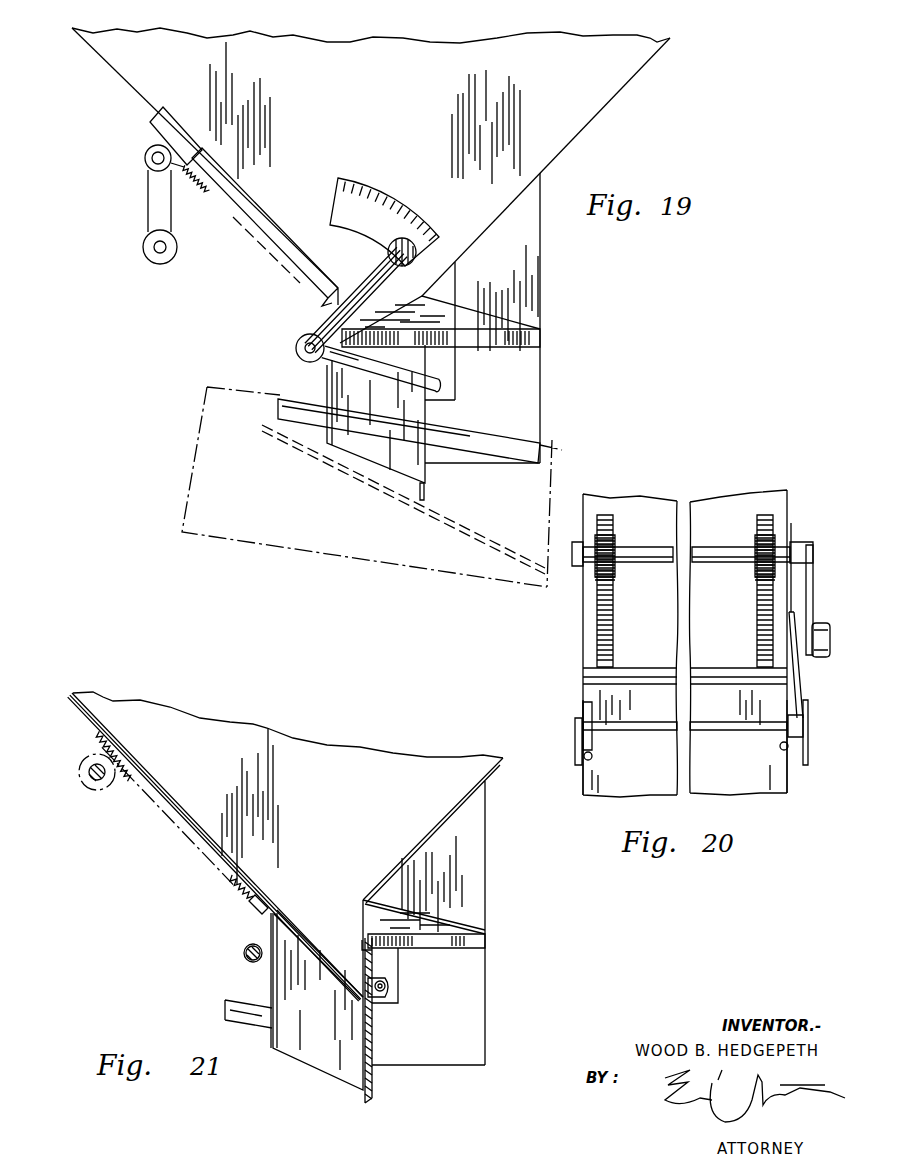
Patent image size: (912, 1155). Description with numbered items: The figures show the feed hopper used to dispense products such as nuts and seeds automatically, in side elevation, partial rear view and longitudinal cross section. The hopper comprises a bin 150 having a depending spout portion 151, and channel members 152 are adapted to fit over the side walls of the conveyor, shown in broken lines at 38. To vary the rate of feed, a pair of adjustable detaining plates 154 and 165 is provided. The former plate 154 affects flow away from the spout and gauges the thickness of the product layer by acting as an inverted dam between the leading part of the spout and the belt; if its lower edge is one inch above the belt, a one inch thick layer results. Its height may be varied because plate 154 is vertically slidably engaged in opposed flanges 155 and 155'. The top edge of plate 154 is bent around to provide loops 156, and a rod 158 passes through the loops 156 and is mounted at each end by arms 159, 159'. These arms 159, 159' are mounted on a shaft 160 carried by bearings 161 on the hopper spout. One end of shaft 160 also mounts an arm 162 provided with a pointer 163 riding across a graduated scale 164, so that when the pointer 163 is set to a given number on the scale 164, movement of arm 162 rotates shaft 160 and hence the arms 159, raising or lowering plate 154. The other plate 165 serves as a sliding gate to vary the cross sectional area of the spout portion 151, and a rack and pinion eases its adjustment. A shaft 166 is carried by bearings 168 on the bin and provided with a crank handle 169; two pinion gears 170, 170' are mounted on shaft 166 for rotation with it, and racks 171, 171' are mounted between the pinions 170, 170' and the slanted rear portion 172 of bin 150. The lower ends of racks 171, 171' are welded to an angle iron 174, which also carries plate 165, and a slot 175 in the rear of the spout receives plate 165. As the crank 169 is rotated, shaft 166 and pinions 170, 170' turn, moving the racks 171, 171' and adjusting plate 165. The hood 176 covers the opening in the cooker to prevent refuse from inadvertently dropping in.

In FIG. 19, the conveyor 38 is at (552, 478).
In FIG. 19, the bin 150 is at (623, 82).
In FIG. 20, the bin 150 is at (654, 500).
In FIG. 21, the bin 150 is at (262, 736).
In FIG. 19, the spout portion 151 is at (333, 380).
In FIG. 20, the spout portion 151 is at (627, 791).
In FIG. 21, the spout portion 151 is at (278, 993).
In FIG. 19, the channel members 152 is at (278, 406).
In FIG. 21, the channel members 152 is at (225, 1023).
In FIG. 19, the detaining plate 154 is at (425, 502).
In FIG. 21, the detaining plate 154 is at (370, 1051).
In FIG. 20, the flange 155 is at (685, 676).
In FIG. 21, the flange 155 is at (403, 975).
In FIG. 21, the flange 155' is at (348, 938).
In FIG. 19, the loops 156 is at (442, 389).
In FIG. 21, the loops 156 is at (386, 995).
In FIG. 21, the rod 158 is at (389, 985).
In FIG. 20, the arm 159 is at (812, 734).
In FIG. 20, the arm 159' is at (560, 733).
In FIG. 20, the shaft 160 is at (660, 734).
In FIG. 21, the shaft 160 is at (254, 948).
In FIG. 20, the bearings 161 is at (588, 760).
In FIG. 21, the bearings 161 is at (246, 958).
In FIG. 19, the arm 162 is at (366, 290).
In FIG. 20, the arm 162 is at (797, 696).
In FIG. 19, the pointer 163 is at (418, 244).
In FIG. 20, the pointer 163 is at (793, 612).
In FIG. 19, the graduated scale 164 is at (403, 199).
In FIG. 21, the detaining plate 165 is at (288, 921).
In FIG. 19, the shaft 166 is at (152, 157).
In FIG. 20, the shaft 166 is at (622, 550).
In FIG. 21, the shaft 166 is at (100, 784).
In FIG. 19, the bearings 168 is at (158, 136).
In FIG. 20, the bearings 168 is at (801, 543).
In FIG. 19, the crank handle 169 is at (162, 223).
In FIG. 20, the crank handle 169 is at (814, 581).
In FIG. 20, the pinion gear 170 is at (739, 558).
In FIG. 20, the pinion gear 170' is at (626, 560).
In FIG. 19, the rack 171 is at (241, 224).
In FIG. 20, the rack 171 is at (744, 591).
In FIG. 20, the rack 171' is at (626, 591).
In FIG. 21, the rack 171' is at (174, 814).
In FIG. 19, the slanted rear portion 172 is at (124, 82).
In FIG. 20, the slanted rear portion 172 is at (583, 625).
In FIG. 21, the slanted rear portion 172 is at (170, 762).
In FIG. 21, the angle iron 174 is at (262, 895).
In FIG. 21, the slot 175 is at (277, 918).
In FIG. 19, the hood 176 is at (463, 316).
In FIG. 21, the hood 176 is at (470, 931).